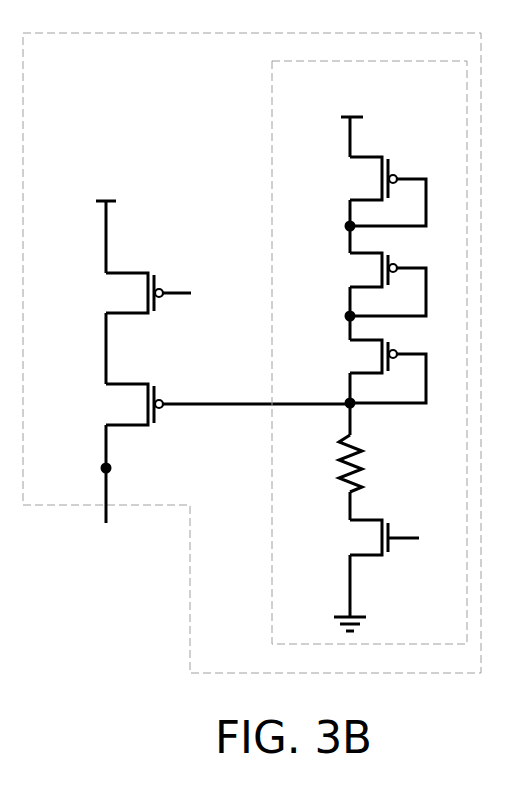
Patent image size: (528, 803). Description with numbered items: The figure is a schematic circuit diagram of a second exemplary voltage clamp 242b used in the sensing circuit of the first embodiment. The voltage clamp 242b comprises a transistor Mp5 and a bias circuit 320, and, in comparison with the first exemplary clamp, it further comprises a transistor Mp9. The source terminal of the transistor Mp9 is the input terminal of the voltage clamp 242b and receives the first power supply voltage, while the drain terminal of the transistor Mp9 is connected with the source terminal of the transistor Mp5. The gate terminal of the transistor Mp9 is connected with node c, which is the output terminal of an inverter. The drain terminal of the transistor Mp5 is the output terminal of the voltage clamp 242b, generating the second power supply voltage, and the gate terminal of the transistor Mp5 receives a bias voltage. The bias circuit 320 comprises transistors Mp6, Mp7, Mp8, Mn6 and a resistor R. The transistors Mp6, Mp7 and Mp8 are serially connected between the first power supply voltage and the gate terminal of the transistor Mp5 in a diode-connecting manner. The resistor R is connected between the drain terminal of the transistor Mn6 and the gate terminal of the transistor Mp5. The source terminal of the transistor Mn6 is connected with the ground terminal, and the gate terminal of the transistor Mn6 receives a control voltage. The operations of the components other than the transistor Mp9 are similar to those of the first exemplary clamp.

The voltage clamp 242b is at (98, 73).
The bias circuit 320 is at (452, 630).
The transistor Mp9 is at (127, 293).
The transistor Mp5 is at (113, 404).
The transistor Mp6 is at (363, 191).
The transistor Mp7 is at (362, 284).
The transistor Mp8 is at (362, 371).
The resistor R is at (363, 463).
The transistor Mn6 is at (360, 537).